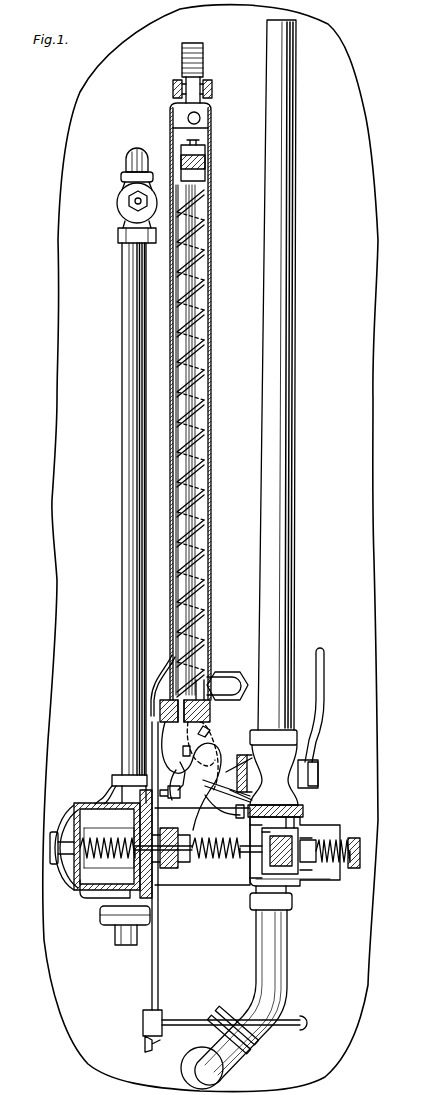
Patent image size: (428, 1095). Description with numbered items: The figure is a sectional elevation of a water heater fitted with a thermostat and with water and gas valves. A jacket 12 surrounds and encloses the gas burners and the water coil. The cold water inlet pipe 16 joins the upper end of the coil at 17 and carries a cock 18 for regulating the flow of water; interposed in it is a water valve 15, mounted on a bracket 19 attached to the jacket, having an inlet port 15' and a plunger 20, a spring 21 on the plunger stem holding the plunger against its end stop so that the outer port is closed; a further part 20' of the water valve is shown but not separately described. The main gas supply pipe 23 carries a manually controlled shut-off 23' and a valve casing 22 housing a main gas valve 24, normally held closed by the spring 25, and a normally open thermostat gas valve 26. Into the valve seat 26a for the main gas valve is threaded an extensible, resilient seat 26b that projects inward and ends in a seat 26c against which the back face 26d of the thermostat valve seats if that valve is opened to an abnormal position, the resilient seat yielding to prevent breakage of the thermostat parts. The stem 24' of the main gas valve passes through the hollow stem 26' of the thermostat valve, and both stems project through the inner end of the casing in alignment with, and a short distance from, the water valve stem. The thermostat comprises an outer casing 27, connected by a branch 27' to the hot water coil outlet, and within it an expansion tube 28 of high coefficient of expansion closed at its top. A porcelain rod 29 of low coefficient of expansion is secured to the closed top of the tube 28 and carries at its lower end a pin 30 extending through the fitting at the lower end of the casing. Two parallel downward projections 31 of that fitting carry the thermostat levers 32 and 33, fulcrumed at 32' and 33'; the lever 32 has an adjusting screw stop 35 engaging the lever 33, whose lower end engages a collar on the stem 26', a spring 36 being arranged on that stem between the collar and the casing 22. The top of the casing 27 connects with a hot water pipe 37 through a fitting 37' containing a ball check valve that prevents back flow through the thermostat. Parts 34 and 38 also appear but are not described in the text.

The jacket 12 is at (370, 475).
The water valve 15 is at (61, 855).
The inlet port 15' is at (90, 881).
The cold water inlet pipe 16 is at (124, 508).
The connection to upper end of coil 17 is at (130, 161).
The cock 18 is at (130, 201).
The bracket 19 is at (190, 870).
The plunger 20 is at (147, 844).
The piston 20' is at (196, 873).
The spring 21 is at (78, 848).
The valve casing 22 is at (320, 886).
The main gas supply pipe 23 is at (287, 375).
The shut-off 23' is at (277, 773).
The main gas valve 24 is at (327, 831).
The stem of main gas valve 24' is at (216, 850).
The spring 25 is at (358, 840).
The thermostat gas valve 26 is at (301, 811).
The hollow stem 26' is at (252, 908).
The valve seat 26a is at (306, 838).
The extensible and resilient valve seat 26b is at (290, 895).
The seat 26c is at (310, 828).
The back face 26d is at (300, 826).
The thermostat casing 27 is at (201, 401).
The branch 27' is at (227, 675).
The expansion tube 28 is at (204, 201).
The rod 29 is at (169, 666).
The pin 30 is at (210, 711).
The downward projections 31 is at (200, 776).
The thermostat lever 32 is at (172, 781).
The fulcrum 32' is at (214, 730).
The thermostat lever 33 is at (237, 779).
The fulcrum 33' is at (222, 817).
The pin 34 is at (183, 752).
The adjusting screw stop 35 is at (173, 811).
The spring 36 is at (233, 826).
The hot water pipe 37 is at (193, 61).
The fitting 37' is at (207, 94).
The link 38 is at (226, 798).